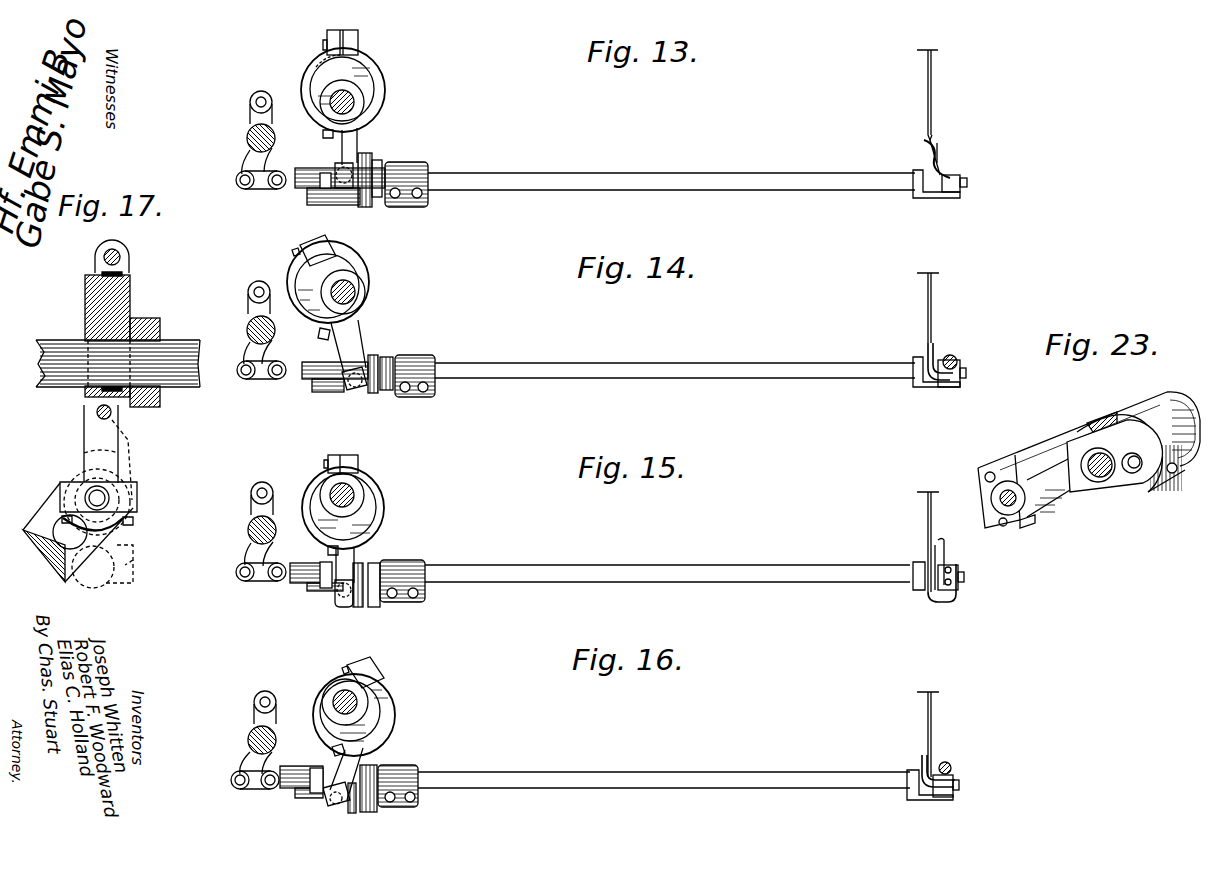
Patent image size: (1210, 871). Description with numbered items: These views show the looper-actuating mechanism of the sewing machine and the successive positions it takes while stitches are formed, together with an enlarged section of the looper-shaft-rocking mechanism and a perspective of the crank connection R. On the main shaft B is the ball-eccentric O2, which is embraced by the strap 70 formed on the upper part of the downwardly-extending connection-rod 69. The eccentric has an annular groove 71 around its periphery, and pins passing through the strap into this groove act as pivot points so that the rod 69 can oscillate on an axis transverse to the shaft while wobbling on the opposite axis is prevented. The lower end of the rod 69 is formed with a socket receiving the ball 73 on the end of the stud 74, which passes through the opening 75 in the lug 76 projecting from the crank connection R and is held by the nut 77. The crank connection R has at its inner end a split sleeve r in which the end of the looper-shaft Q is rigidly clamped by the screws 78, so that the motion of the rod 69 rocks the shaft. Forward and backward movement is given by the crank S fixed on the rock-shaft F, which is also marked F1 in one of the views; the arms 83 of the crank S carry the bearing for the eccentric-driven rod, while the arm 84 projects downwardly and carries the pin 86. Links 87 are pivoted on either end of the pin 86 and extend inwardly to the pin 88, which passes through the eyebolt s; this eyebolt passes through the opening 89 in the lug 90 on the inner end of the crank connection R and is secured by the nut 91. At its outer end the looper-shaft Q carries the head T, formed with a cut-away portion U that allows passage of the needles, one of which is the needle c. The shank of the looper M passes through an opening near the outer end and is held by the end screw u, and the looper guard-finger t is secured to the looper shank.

In FIG. 13, the strap 70 is at (378, 66).
In FIG. 14, the strap 70 is at (352, 268).
In FIG. 15, the strap 70 is at (343, 505).
In FIG. 16, the strap 70 is at (322, 703).
In FIG. 17, the strap 70 is at (97, 268).
In FIG. 17, the annular groove 71 is at (120, 392).
In FIG. 13, the connection-rod 69 is at (348, 148).
In FIG. 14, the connection-rod 69 is at (356, 348).
In FIG. 15, the connection-rod 69 is at (345, 565).
In FIG. 16, the connection-rod 69 is at (346, 774).
In FIG. 17, the connection-rod 69 is at (88, 445).
In FIG. 13, the ball 73 is at (350, 190).
In FIG. 14, the ball 73 is at (348, 390).
In FIG. 15, the ball 73 is at (345, 605).
In FIG. 16, the ball 73 is at (330, 800).
In FIG. 17, the ball 73 is at (103, 495).
In FIG. 14, the stud 74 is at (374, 393).
In FIG. 15, the stud 74 is at (358, 600).
In FIG. 16, the stud 74 is at (353, 813).
In FIG. 23, the opening 75 is at (1134, 474).
In FIG. 17, the lug 76 is at (100, 540).
In FIG. 23, the lug 76 is at (1098, 493).
In FIG. 13, the nut 77 is at (377, 165).
In FIG. 14, the nut 77 is at (382, 370).
In FIG. 15, the nut 77 is at (378, 592).
In FIG. 16, the nut 77 is at (368, 783).
In FIG. 13, the screws 78 is at (416, 198).
In FIG. 14, the screws 78 is at (424, 392).
In FIG. 15, the screws 78 is at (418, 595).
In FIG. 16, the screws 78 is at (400, 797).
In FIG. 23, the screws 78 is at (1173, 473).
In FIG. 13, the arms 83 is at (254, 121).
In FIG. 14, the arms 83 is at (254, 309).
In FIG. 15, the arms 83 is at (254, 510).
In FIG. 16, the arms 83 is at (254, 720).
In FIG. 13, the arm 84 is at (241, 164).
In FIG. 14, the arm 84 is at (241, 356).
In FIG. 15, the arm 84 is at (241, 555).
In FIG. 13, the pin 86 is at (244, 182).
In FIG. 14, the pin 86 is at (244, 372).
In FIG. 15, the pin 86 is at (244, 575).
In FIG. 16, the pin 86 is at (238, 783).
In FIG. 13, the links 87 is at (262, 185).
In FIG. 14, the links 87 is at (264, 378).
In FIG. 15, the links 87 is at (262, 582).
In FIG. 16, the links 87 is at (254, 790).
In FIG. 13, the pin 88 is at (277, 185).
In FIG. 14, the pin 88 is at (280, 377).
In FIG. 15, the pin 88 is at (277, 572).
In FIG. 16, the pin 88 is at (272, 790).
In FIG. 23, the opening 89 is at (1005, 500).
In FIG. 15, the lug 90 is at (305, 585).
In FIG. 16, the lug 90 is at (300, 775).
In FIG. 23, the lug 90 is at (1031, 525).
In FIG. 13, the nut 91 is at (326, 188).
In FIG. 15, the nut 91 is at (326, 592).
In FIG. 16, the nut 91 is at (317, 770).
In FIG. 13, the looper-shaft Q is at (565, 178).
In FIG. 14, the looper-shaft Q is at (718, 366).
In FIG. 15, the looper-shaft Q is at (551, 570).
In FIG. 16, the looper-shaft Q is at (724, 776).
In FIG. 13, the main shaft B is at (355, 107).
In FIG. 14, the main shaft B is at (352, 292).
In FIG. 15, the main shaft B is at (352, 495).
In FIG. 16, the main shaft B is at (357, 702).
In FIG. 17, the main shaft B is at (101, 363).
In FIG. 13, the ball-eccentric O2 is at (365, 82).
In FIG. 14, the ball-eccentric O2 is at (310, 285).
In FIG. 15, the ball-eccentric O2 is at (365, 525).
In FIG. 16, the ball-eccentric O2 is at (378, 717).
In FIG. 17, the ball-eccentric O2 is at (85, 313).
In FIG. 13, the crank S is at (248, 142).
In FIG. 14, the crank S is at (248, 334).
In FIG. 15, the crank S is at (248, 533).
In FIG. 16, the crank S is at (248, 743).
In FIG. 13, the arm F1 is at (268, 140).
In FIG. 14, the rock-shaft F is at (262, 345).
In FIG. 15, the rock-shaft F is at (266, 545).
In FIG. 16, the rock-shaft F is at (268, 752).
In FIG. 13, the eyebolt s is at (290, 172).
In FIG. 14, the eyebolt s is at (305, 360).
In FIG. 15, the eyebolt s is at (290, 568).
In FIG. 16, the eyebolt s is at (246, 758).
In FIG. 13, the split sleeve r is at (412, 172).
In FIG. 14, the split sleeve r is at (422, 360).
In FIG. 15, the split sleeve r is at (410, 565).
In FIG. 16, the split sleeve r is at (398, 786).
In FIG. 23, the split sleeve r is at (1174, 442).
In FIG. 17, the crank connection R is at (40, 534).
In FIG. 23, the crank connection R is at (1072, 460).
In FIG. 13, the needle c is at (931, 107).
In FIG. 14, the needle c is at (931, 322).
In FIG. 15, the needle c is at (931, 523).
In FIG. 16, the needle c is at (931, 722).
In FIG. 13, the looper M is at (921, 150).
In FIG. 14, the looper M is at (926, 348).
In FIG. 15, the looper M is at (926, 553).
In FIG. 16, the looper M is at (922, 752).
In FIG. 13, the looper guard-finger t is at (942, 153).
In FIG. 14, the looper guard-finger t is at (952, 358).
In FIG. 15, the looper guard-finger t is at (944, 558).
In FIG. 16, the looper guard-finger t is at (946, 766).
In FIG. 13, the end screw u is at (967, 184).
In FIG. 14, the end screw u is at (967, 374).
In FIG. 15, the end screw u is at (965, 577).
In FIG. 16, the end screw u is at (960, 785).
In FIG. 13, the cut-away portion U is at (932, 193).
In FIG. 14, the cut-away portion U is at (931, 385).
In FIG. 15, the cut-away portion U is at (918, 600).
In FIG. 16, the cut-away portion U is at (926, 795).
In FIG. 13, the head T is at (951, 196).
In FIG. 14, the head T is at (948, 388).
In FIG. 15, the head T is at (942, 596).
In FIG. 16, the head T is at (946, 796).